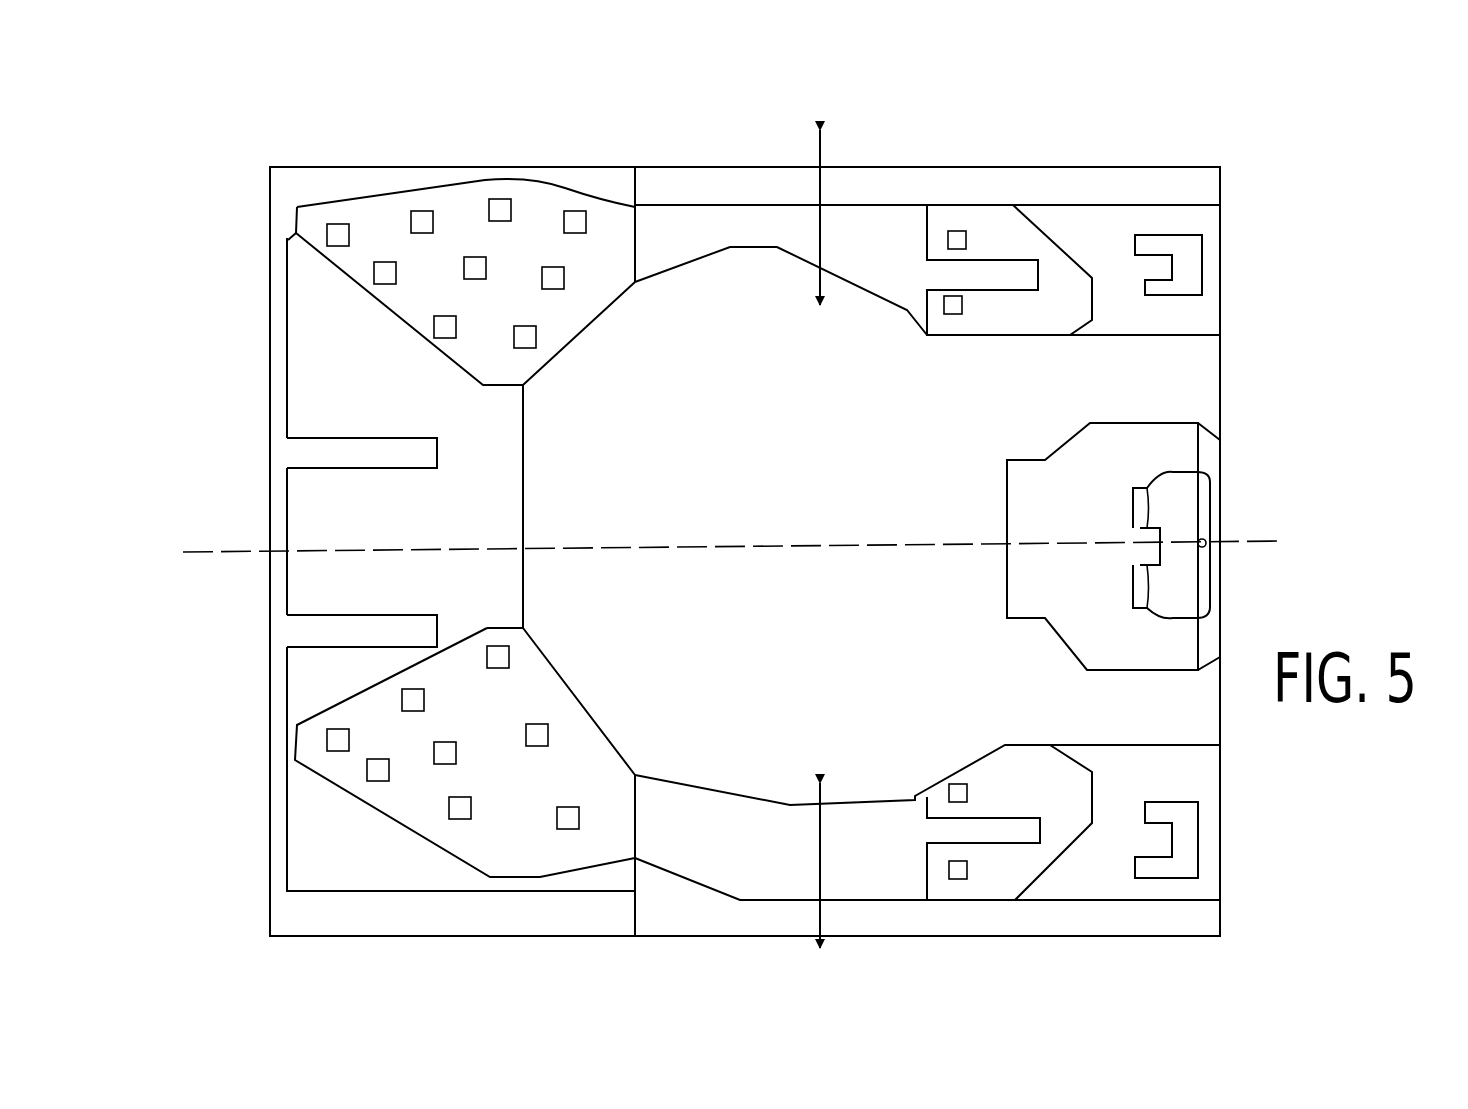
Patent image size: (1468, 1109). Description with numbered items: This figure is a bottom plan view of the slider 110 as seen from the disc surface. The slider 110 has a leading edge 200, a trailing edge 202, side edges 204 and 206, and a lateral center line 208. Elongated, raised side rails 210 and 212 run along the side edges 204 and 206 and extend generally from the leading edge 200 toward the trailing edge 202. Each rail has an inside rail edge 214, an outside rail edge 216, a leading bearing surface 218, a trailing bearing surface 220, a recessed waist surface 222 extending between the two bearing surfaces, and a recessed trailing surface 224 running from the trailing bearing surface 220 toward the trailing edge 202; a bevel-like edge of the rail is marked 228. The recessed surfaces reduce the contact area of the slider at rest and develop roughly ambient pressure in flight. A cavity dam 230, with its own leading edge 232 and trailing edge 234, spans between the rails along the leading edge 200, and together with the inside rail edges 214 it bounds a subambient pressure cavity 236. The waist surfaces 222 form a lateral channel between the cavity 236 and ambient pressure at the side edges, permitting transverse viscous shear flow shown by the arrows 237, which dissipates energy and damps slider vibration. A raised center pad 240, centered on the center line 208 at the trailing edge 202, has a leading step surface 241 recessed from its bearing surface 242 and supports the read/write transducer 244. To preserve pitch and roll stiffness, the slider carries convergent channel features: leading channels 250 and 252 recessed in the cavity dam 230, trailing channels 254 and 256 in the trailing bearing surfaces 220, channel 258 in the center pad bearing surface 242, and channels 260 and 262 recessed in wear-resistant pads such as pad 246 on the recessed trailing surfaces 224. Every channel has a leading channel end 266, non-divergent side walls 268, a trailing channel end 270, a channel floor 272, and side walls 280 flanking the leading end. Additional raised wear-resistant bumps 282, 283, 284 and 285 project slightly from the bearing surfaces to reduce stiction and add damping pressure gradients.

The slider 110 is at (240, 163).
The leading edge 200 is at (270, 885).
The trailing edge 202 is at (1220, 897).
The side edge 204 is at (592, 178).
The side edge 206 is at (545, 936).
The lateral center line 208 is at (262, 551).
The side rail 210 is at (703, 192).
The side rail 212 is at (440, 860).
The inside rail edge 214 is at (690, 262).
The outside rail edge 216 is at (660, 195).
The leading bearing surface 218 is at (575, 302).
The trailing bearing surface 220 is at (980, 345).
The recessed waist surface 222 is at (750, 245).
The recessed trailing surface 224 is at (1110, 215).
The beveled edge 228 is at (1095, 340).
The cavity dam 230 is at (500, 525).
The leading edge 232 is at (285, 705).
The trailing edge 234 is at (523, 575).
The subambient pressure cavity 236 is at (800, 508).
The arrows 237 is at (832, 170).
The center pad 240 is at (1003, 468).
The leading step surface 241 is at (1010, 562).
The bearing surface 242 is at (1158, 490).
The read/write transducer 244 is at (1206, 540).
The wear-resistant pad 246 is at (1210, 240).
The leading convergent channel feature 250 is at (282, 452).
The leading convergent channel feature 252 is at (282, 633).
The trailing convergent channel feature 254 is at (930, 270).
The trailing convergent channel feature 256 is at (930, 835).
The trailing convergent channel feature 258 is at (1130, 538).
The channel 260 is at (1135, 275).
The channel 262 is at (1158, 840).
The leading channel end 266 is at (1140, 263).
The non-divergent side walls 268 is at (1000, 270).
The trailing channel end 270 is at (1175, 265).
The channel floor 272 is at (1172, 270).
The side wall 280 is at (930, 210).
The wear-resistant pad 282 is at (422, 218).
The wear-resistant pad 283 is at (537, 724).
The wear-resistant pad 284 is at (958, 232).
The wear-resistant pad 285 is at (958, 862).